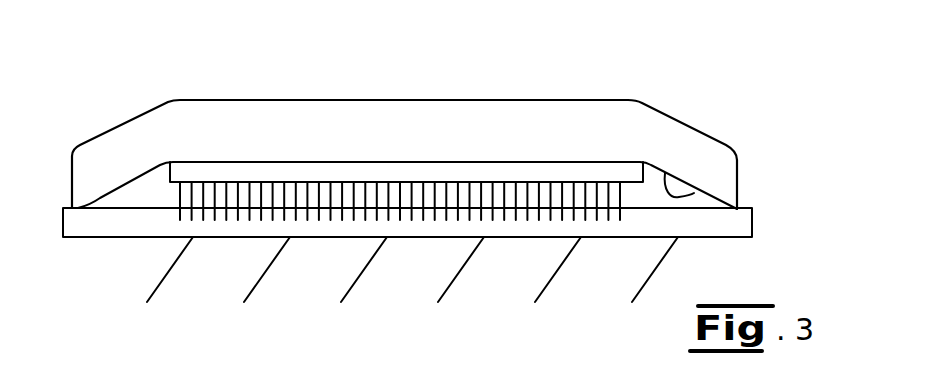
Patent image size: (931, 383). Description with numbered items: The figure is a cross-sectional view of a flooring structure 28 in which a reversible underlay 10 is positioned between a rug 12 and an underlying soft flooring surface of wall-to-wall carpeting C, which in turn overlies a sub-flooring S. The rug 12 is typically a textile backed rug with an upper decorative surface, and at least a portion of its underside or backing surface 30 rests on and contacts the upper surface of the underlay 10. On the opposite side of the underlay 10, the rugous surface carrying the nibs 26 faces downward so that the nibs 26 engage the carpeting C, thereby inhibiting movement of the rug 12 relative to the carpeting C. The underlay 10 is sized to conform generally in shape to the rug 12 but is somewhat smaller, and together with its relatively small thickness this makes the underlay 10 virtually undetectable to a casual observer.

The reversible underlay 10 is at (362, 255).
The rug 12 is at (223, 100).
The nibs 26 is at (483, 214).
The flooring structure 28 is at (436, 182).
The backing surface 30 is at (694, 193).
The carpeting C is at (733, 225).
The sub-flooring S is at (412, 269).